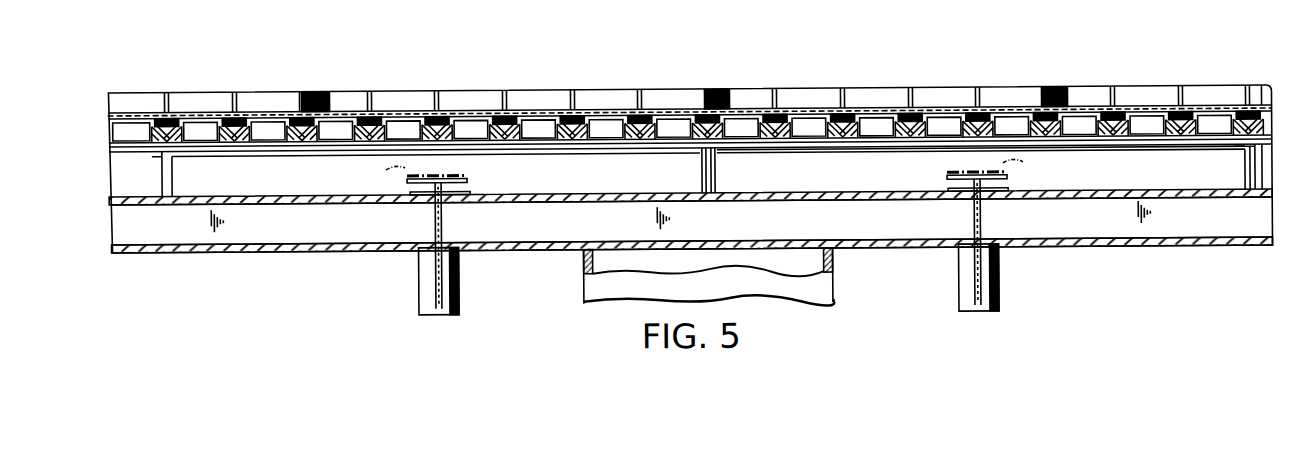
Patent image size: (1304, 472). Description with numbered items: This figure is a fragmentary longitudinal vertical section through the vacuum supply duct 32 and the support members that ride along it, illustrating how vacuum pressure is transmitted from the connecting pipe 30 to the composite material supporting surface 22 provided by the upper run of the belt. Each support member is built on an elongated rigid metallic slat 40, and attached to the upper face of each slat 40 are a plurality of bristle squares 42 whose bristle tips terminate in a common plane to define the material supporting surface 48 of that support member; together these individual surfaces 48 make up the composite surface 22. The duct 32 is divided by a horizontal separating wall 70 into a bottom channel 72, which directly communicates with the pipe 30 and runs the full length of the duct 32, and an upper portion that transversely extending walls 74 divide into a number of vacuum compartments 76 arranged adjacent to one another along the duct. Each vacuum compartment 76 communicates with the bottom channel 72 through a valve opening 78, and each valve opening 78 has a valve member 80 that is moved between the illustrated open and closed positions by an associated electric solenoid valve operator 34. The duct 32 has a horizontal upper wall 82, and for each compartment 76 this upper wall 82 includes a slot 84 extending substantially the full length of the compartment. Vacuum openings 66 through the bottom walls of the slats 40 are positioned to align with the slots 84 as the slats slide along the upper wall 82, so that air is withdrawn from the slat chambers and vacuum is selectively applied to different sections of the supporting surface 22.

The material supporting surface 22 is at (802, 93).
The connecting pipe 30 is at (820, 284).
The vacuum supply duct 32 is at (1178, 248).
The electric solenoid valve operator 34 is at (458, 277).
The slat 40 is at (903, 141).
The bristle square 42 is at (987, 97).
The material supporting surface of the support member 48 is at (658, 90).
The vacuum opening 66 is at (600, 132).
The horizontal separating wall 70 is at (285, 203).
The bottom channel 72 is at (1110, 225).
The transversely extending wall 74 is at (172, 164).
The vacuum compartment 76 is at (463, 156).
The valve opening 78 is at (460, 198).
The valve member 80 is at (405, 188).
The upper wall 82 is at (266, 150).
The slot 84 is at (402, 145).